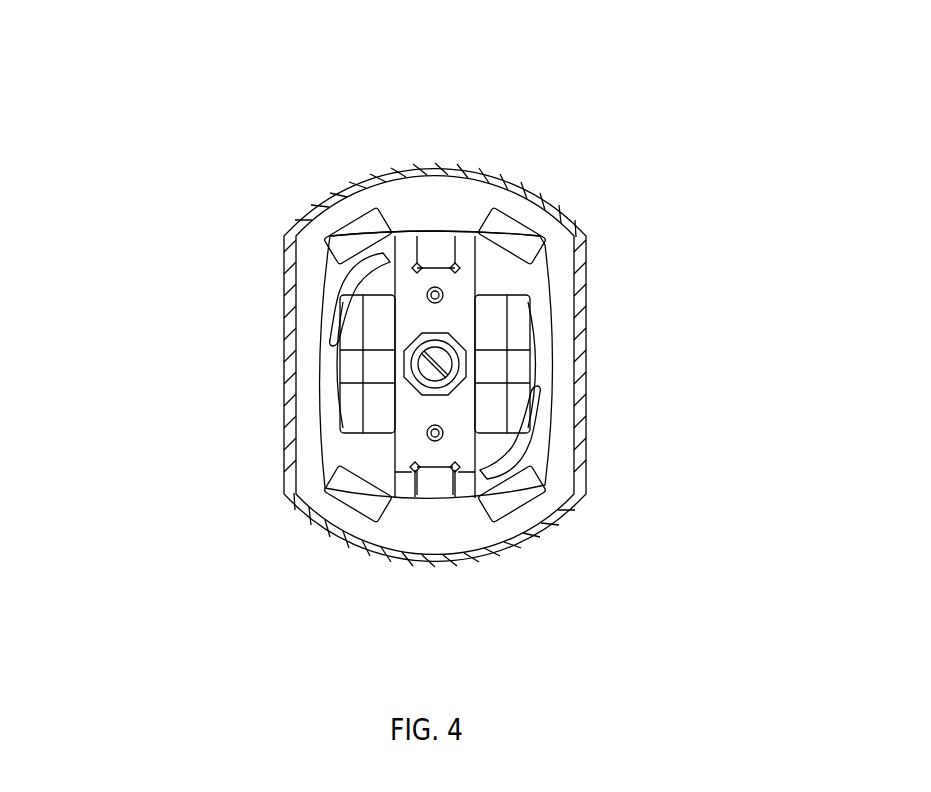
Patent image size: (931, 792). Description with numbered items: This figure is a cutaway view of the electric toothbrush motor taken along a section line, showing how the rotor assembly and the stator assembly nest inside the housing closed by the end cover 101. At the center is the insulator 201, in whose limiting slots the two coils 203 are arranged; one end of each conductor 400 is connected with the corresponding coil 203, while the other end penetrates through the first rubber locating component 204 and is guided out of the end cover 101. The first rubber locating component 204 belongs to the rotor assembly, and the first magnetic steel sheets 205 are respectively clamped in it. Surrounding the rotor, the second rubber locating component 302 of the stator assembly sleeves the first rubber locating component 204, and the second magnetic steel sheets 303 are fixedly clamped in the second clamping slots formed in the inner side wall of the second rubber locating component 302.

The end cover 101 is at (287, 253).
The insulator 201 is at (320, 383).
The coil 203 is at (363, 425).
The first rubber locating component 204 is at (460, 417).
The first magnetic steel sheet 205 is at (437, 490).
The second rubber locating component 302 is at (442, 205).
The second magnetic steel sheet 303 is at (523, 240).
The conductor 400 is at (443, 300).